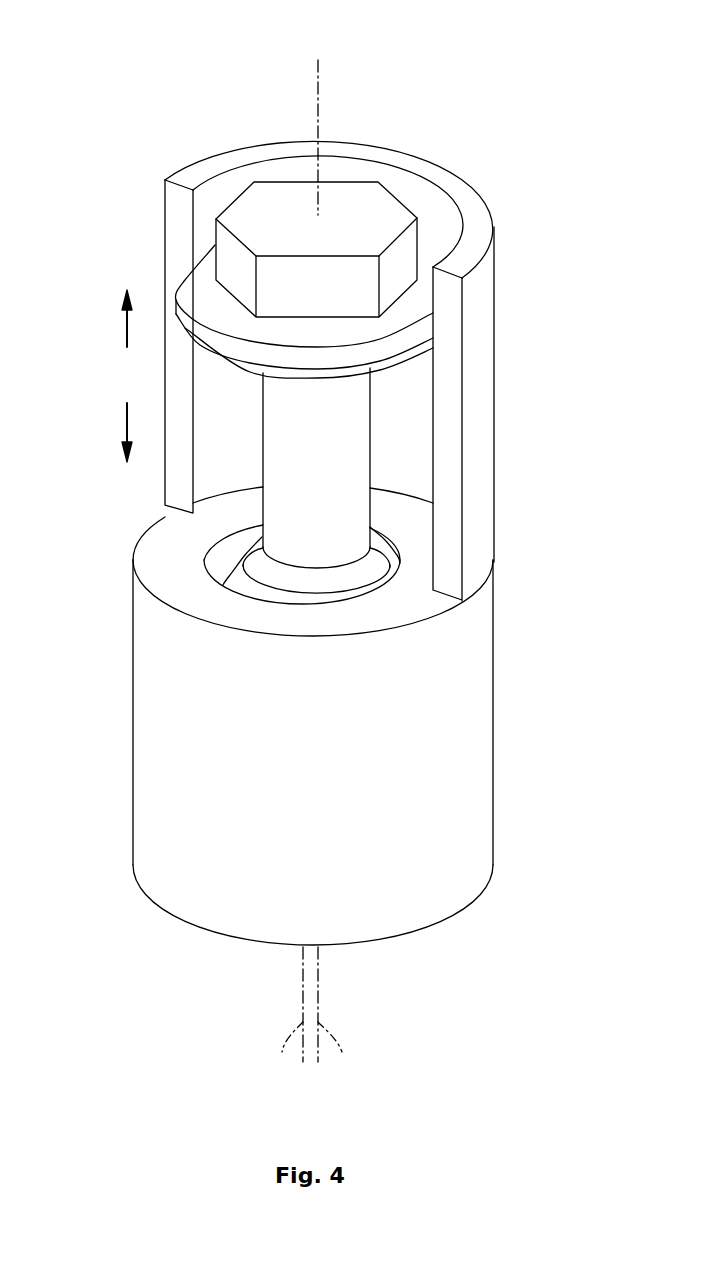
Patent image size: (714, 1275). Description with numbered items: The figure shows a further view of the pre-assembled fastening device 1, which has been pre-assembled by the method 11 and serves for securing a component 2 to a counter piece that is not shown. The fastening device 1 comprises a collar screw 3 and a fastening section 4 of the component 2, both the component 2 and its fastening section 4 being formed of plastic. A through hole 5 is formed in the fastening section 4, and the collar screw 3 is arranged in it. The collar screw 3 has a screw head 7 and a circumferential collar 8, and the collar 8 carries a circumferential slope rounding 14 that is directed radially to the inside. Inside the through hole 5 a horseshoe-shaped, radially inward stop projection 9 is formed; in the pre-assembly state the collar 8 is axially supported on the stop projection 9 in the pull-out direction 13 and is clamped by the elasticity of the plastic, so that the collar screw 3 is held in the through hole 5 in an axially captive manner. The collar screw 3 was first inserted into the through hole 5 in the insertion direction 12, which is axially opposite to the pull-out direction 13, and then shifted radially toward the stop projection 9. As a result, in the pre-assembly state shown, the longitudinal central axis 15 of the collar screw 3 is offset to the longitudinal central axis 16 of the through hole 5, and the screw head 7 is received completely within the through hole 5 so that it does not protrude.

The fastening device 1 is at (419, 309).
The method 11 is at (329, 209).
The component 2 is at (359, 716).
The collar screw 3 is at (337, 210).
The fastening section 4 is at (483, 797).
The through hole 5 is at (239, 428).
The screw head 7 is at (348, 198).
The collar 8 is at (267, 596).
The stop projection 9 is at (376, 538).
The insertion direction 12 is at (125, 424).
The pull-out direction 13 is at (125, 327).
The slope rounding 14 is at (233, 573).
The longitudinal central axis of the collar screw 15 is at (342, 1055).
The longitudinal central axis of the through hole 16 is at (282, 1055).